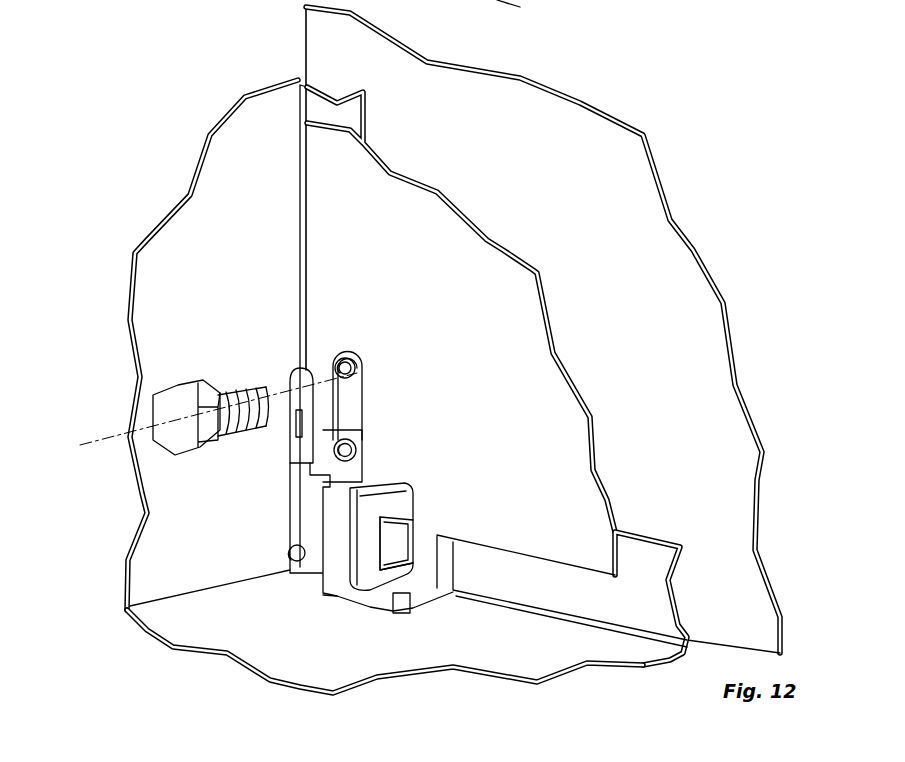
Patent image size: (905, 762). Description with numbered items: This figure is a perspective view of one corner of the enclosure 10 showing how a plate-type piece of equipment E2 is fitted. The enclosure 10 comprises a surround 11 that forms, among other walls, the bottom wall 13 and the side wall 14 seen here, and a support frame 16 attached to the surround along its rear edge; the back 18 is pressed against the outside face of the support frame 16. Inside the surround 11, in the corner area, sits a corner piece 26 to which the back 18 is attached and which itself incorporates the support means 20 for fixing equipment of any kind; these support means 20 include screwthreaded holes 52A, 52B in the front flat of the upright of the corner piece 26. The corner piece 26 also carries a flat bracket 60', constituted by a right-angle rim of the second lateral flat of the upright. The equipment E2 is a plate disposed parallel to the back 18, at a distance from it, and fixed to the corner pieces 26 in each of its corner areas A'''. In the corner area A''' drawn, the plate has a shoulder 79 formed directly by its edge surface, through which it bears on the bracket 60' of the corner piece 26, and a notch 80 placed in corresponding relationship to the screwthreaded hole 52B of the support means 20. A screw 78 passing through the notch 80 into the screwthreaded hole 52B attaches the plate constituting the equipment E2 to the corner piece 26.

The enclosure 10 is at (757, 251).
The surround 11 is at (152, 136).
The bottom wall 13 is at (368, 663).
The side wall 14 is at (165, 326).
The support frame 16 is at (664, 539).
The back 18 is at (768, 451).
The support means 20 is at (349, 416).
The corner piece 26 is at (298, 588).
The screwthreaded hole 52A is at (356, 453).
The screwthreaded hole 52B is at (356, 368).
The bracket 60' is at (308, 614).
The screw 78 is at (168, 460).
The shoulder 79 is at (422, 533).
The notch 80 is at (340, 400).
The equipment E2 is at (531, 257).
The corner area A''' is at (604, 638).